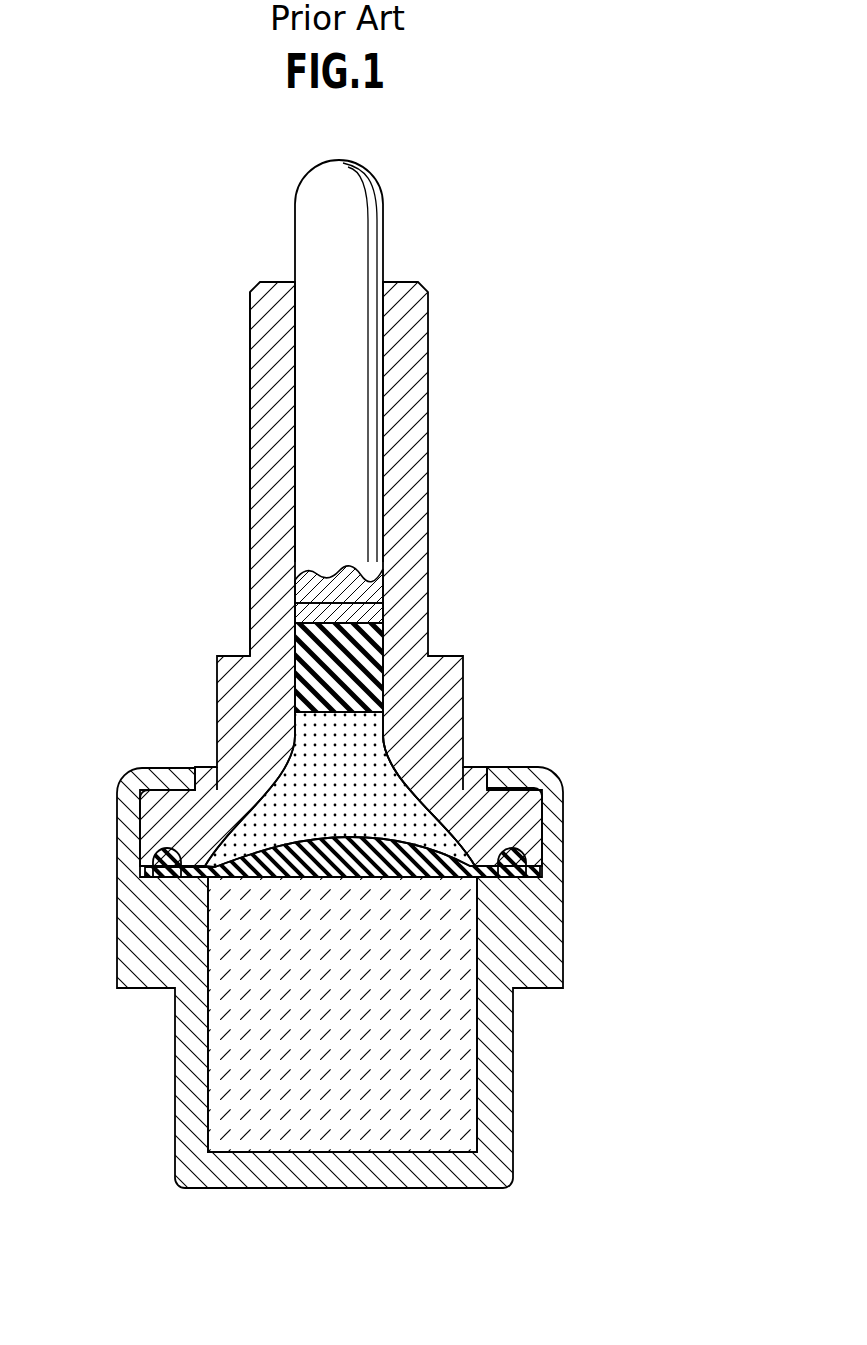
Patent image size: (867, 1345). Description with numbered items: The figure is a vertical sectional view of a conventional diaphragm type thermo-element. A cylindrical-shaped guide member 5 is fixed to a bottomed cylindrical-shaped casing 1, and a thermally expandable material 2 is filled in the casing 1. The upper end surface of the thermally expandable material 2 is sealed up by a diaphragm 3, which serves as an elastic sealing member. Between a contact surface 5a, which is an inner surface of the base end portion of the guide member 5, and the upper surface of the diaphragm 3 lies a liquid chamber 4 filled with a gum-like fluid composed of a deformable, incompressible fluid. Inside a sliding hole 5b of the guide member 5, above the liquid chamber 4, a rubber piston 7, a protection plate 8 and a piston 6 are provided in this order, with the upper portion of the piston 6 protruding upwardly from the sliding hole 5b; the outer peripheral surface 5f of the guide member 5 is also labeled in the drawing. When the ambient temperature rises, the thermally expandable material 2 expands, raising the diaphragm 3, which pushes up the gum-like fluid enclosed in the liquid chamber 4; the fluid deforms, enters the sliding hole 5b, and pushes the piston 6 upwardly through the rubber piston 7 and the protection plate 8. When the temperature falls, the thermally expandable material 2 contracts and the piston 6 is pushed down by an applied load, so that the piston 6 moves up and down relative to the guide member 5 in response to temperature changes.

The casing 1 is at (158, 935).
The thermally expandable material 2 is at (285, 1063).
The diaphragm 3 is at (238, 872).
The liquid chamber 4 is at (322, 793).
The guide member 5 is at (428, 685).
The contact surface 5a is at (400, 760).
The sliding hole 5b is at (292, 524).
The outer peripheral surface of holder 5f is at (248, 487).
The piston 6 is at (322, 408).
The rubber piston 7 is at (316, 653).
The protection plate 8 is at (382, 612).